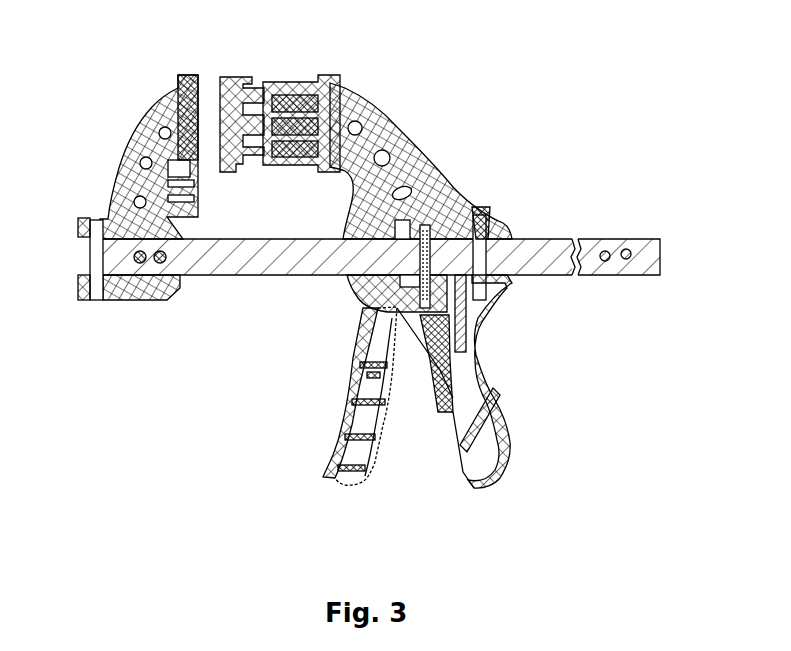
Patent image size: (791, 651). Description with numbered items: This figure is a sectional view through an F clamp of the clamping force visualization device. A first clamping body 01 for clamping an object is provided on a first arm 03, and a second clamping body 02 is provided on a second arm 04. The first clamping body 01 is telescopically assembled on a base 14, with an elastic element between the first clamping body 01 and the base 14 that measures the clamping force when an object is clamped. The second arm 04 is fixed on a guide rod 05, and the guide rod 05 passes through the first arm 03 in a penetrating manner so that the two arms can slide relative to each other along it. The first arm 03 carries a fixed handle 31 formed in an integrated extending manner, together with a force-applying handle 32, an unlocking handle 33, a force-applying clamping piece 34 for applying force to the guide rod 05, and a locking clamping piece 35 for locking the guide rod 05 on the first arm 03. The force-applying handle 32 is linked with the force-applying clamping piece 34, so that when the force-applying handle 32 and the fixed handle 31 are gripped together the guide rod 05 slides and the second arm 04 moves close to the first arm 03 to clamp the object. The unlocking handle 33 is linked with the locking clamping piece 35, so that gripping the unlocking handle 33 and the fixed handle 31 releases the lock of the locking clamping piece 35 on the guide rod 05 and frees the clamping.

The first clamping body 01 is at (233, 75).
The second clamping body 02 is at (187, 76).
The first arm 03 is at (400, 132).
The second arm 04 is at (135, 157).
The guide rod 05 is at (255, 275).
The base 14 is at (303, 82).
The fixed handle 31 is at (480, 373).
The force-applying handle 32 is at (367, 388).
The unlocking handle 33 is at (453, 399).
The force-applying clamping piece 34 is at (410, 237).
The locking clamping piece 35 is at (475, 214).